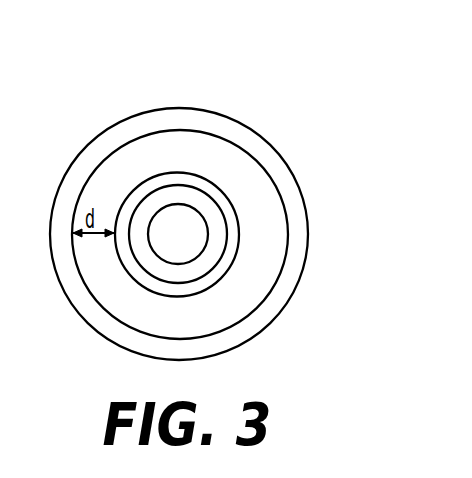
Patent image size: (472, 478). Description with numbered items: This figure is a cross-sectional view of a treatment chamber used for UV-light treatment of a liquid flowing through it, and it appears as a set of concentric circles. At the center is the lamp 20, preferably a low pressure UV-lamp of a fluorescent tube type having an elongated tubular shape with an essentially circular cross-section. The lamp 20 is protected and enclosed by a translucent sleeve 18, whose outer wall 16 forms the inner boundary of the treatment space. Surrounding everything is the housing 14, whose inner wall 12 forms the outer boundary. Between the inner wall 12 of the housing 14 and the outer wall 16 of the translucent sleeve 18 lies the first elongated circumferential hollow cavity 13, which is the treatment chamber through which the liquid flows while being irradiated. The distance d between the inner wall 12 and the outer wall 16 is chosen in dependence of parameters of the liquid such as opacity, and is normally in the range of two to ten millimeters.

The inner wall 12 is at (222, 138).
The first elongated circumferential hollow cavity 13 is at (241, 288).
The housing 14 is at (246, 124).
The outer wall 16 is at (178, 172).
The translucent sleeve 18 is at (206, 190).
The lamp 20 is at (167, 247).